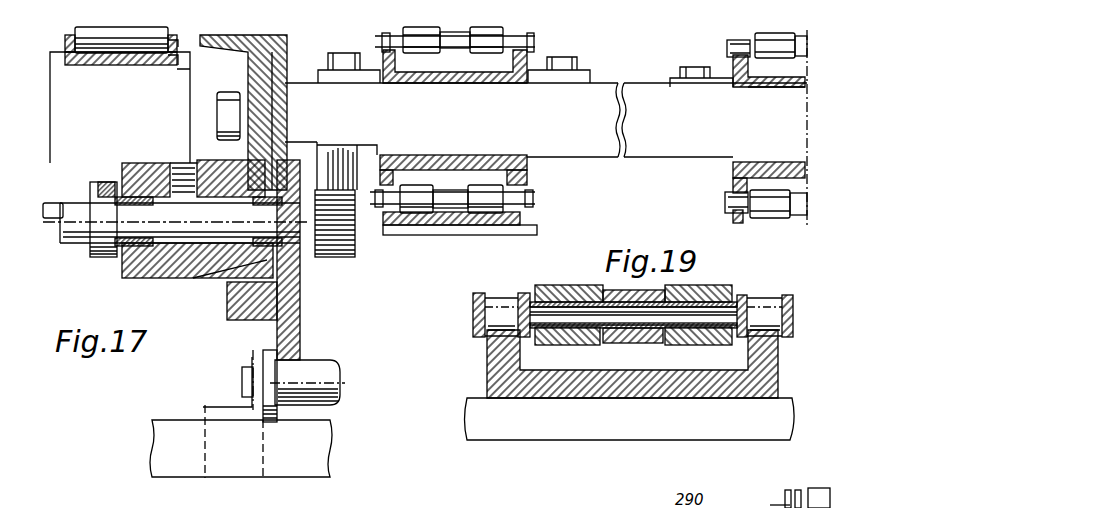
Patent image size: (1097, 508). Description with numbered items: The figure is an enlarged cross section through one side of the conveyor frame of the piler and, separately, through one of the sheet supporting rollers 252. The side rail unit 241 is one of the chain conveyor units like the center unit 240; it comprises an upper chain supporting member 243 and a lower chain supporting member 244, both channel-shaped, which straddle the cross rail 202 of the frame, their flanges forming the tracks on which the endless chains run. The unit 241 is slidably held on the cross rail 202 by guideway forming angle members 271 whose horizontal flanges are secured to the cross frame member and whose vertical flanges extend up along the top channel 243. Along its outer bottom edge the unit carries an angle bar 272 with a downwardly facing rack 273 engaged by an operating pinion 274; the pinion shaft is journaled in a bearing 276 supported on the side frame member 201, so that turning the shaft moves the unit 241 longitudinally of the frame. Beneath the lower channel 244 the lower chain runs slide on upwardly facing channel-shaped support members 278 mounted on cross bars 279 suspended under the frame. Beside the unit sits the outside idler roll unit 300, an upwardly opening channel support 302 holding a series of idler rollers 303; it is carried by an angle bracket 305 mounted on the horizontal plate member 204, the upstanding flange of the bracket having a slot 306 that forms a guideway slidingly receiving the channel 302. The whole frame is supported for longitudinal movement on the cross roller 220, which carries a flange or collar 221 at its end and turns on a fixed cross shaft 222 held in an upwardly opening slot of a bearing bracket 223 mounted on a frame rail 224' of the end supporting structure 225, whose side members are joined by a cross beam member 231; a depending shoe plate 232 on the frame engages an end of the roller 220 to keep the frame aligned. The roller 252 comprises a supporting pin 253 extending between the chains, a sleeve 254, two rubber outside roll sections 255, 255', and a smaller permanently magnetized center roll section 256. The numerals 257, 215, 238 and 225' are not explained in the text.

In FIG. 17, the outside idler roll unit 300 is at (97, 68).
In FIG. 17, the slot 306 is at (132, 66).
In FIG. 17, the idler roller 303 is at (178, 45).
In FIG. 17, the channel support 302 is at (178, 58).
In FIG. 17, the angle bracket 305 is at (212, 139).
In FIG. 17, the side frame member 201 is at (288, 58).
In FIG. 17, the cross rail 202 is at (640, 155).
In FIG. 17, the guideway forming angle member 271 is at (559, 84).
In FIG. 17, the chain supporting member 243 is at (737, 92).
In FIG. 19, the chain supporting member 243 is at (610, 393).
In FIG. 17, the side rail unit 241 is at (468, 84).
In FIG. 17, the sheet supporting roller 252 is at (753, 221).
In FIG. 19, the sheet supporting roller 252 is at (545, 285).
In FIG. 17, the pedestal 257 is at (685, 88).
In FIG. 17, the center rail unit 240 is at (765, 88).
In FIG. 17, the chain supporting member 244 is at (790, 160).
In FIG. 17, the angle bar 272 is at (363, 160).
In FIG. 17, the rack 273 is at (352, 212).
In FIG. 17, the operating pinion 274 is at (350, 255).
In FIG. 17, the support member 278 is at (432, 222).
In FIG. 17, the cross bar 279 is at (450, 234).
In FIG. 17, the horizontal plate member 204 is at (55, 220).
In FIG. 17, the nut 215 is at (95, 192).
In FIG. 17, the bearing 276 is at (125, 262).
In FIG. 17, the block 238 is at (227, 303).
In FIG. 17, the shoe plate 232 is at (301, 292).
In FIG. 17, the cross roller 220 is at (321, 362).
In FIG. 17, the flange or collar 221 is at (266, 362).
In FIG. 17, the fixed cross shaft 222 is at (243, 380).
In FIG. 17, the bearing bracket 223 is at (205, 407).
In FIG. 17, the cross beam member 231 is at (155, 450).
In FIG. 17, the frame rail 224' is at (226, 458).
In FIG. 19, the end supporting structure 225 is at (501, 300).
In FIG. 19, the collar 225' is at (767, 300).
In FIG. 19, the supporting pin or shaft 253 is at (690, 328).
In FIG. 19, the sleeve 254 is at (556, 334).
In FIG. 19, the outside roll section 255 is at (633, 346).
In FIG. 19, the center roll section 256 is at (638, 336).
In FIG. 19, the outside roll section 255' is at (698, 348).